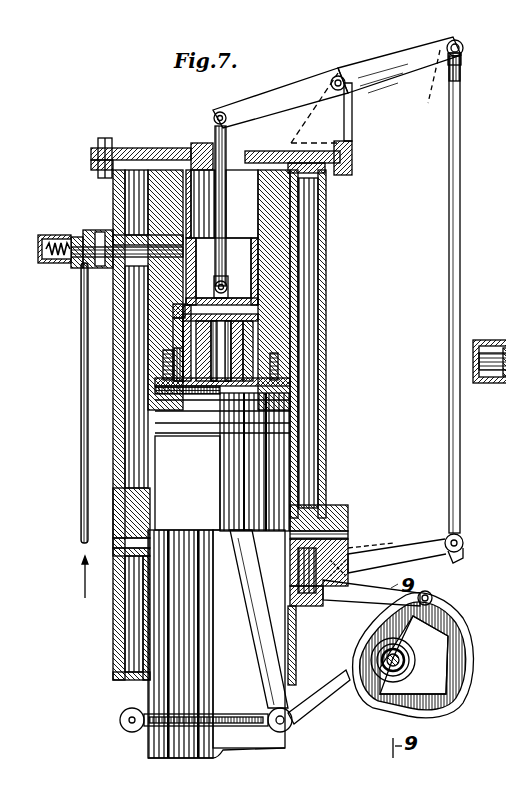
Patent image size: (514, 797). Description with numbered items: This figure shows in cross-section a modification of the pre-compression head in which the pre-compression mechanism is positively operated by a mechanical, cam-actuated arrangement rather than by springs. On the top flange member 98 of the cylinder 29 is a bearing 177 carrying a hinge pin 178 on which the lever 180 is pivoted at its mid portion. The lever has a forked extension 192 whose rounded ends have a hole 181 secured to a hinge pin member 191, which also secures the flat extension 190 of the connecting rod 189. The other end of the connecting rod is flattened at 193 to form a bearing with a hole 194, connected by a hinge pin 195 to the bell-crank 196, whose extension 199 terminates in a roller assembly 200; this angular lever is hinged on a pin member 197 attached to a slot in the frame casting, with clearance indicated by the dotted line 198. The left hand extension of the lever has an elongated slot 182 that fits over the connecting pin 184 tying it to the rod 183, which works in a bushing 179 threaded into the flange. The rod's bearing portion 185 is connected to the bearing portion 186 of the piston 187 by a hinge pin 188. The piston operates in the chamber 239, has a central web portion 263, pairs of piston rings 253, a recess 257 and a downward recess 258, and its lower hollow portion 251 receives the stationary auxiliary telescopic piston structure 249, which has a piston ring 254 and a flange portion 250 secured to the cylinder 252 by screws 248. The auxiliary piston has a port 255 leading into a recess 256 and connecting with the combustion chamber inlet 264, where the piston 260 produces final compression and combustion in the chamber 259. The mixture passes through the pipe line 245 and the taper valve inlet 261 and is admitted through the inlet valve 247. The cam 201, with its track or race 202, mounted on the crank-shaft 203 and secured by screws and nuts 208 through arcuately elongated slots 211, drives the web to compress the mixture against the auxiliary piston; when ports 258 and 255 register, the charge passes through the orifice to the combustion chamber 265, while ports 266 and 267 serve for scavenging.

The top flange member 98 is at (148, 141).
The bushing 179 is at (198, 135).
The cylinder 29 is at (105, 180).
The piston 187 is at (195, 220).
The rod 183 is at (218, 127).
The hinge pin 188 is at (216, 270).
The bearing portion 185 is at (243, 260).
The bearing portion 186 is at (222, 283).
The chamber 239 is at (318, 182).
The bearing 177 is at (344, 119).
The connecting pin 184 is at (228, 102).
The lever 180 is at (380, 62).
The elongated slot 182 is at (205, 104).
The hinge pin 178 is at (328, 66).
The hinge pin member 191 is at (445, 33).
The hole 181 is at (455, 42).
The forked extension 192 is at (429, 85).
The flat extension 190 is at (452, 60).
The connecting rod 189 is at (441, 132).
The central web portion 263 is at (250, 294).
The recess 257 is at (250, 308).
The port 258 is at (235, 318).
The port 255 is at (245, 330).
The piston rings 253 is at (175, 290).
The piston ring 254 is at (165, 302).
The cylinder 252 is at (170, 330).
The recess 256 is at (166, 345).
The screws 248 is at (282, 360).
The chamber 259 is at (147, 383).
The flange portion 250 is at (282, 378).
The auxiliary telescopic piston structure 249 is at (282, 390).
The combustion chamber inlet 264 is at (213, 390).
The piston 260 is at (190, 503).
The port 266 is at (105, 534).
The port 267 is at (340, 517).
The pin member 197 is at (320, 594).
The dotted line 198 is at (340, 541).
The bell-crank 196 is at (418, 534).
The hinge pin 195 is at (438, 546).
The flattened end 193 is at (455, 537).
The hole 194 is at (450, 546).
The extension 199 is at (372, 590).
The roller assembly 200 is at (425, 592).
The cam 201 is at (466, 672).
The track or race 202 is at (425, 710).
The crank-shaft 203 is at (360, 690).
The screws and nuts 208 is at (400, 640).
The arcuately elongated slots 211 is at (396, 655).
The combustion chamber 265 is at (235, 677).
The lower hollow portion 251 is at (90, 298).
The inlet valve 247 is at (70, 262).
The pipe line 245 is at (73, 422).
The taper valve inlet 261 is at (513, 390).